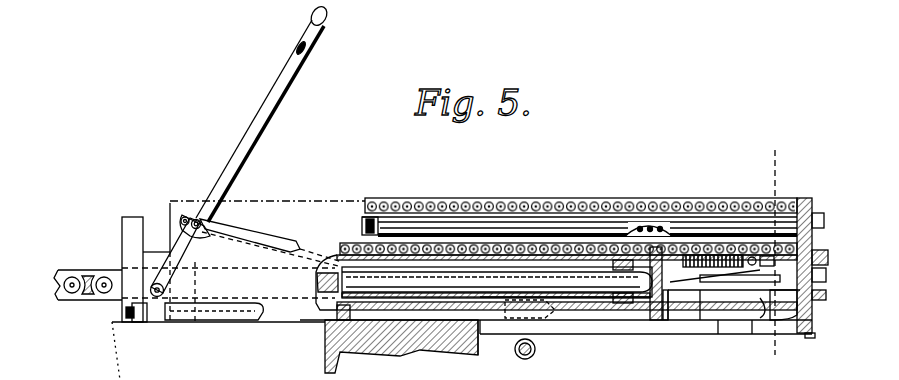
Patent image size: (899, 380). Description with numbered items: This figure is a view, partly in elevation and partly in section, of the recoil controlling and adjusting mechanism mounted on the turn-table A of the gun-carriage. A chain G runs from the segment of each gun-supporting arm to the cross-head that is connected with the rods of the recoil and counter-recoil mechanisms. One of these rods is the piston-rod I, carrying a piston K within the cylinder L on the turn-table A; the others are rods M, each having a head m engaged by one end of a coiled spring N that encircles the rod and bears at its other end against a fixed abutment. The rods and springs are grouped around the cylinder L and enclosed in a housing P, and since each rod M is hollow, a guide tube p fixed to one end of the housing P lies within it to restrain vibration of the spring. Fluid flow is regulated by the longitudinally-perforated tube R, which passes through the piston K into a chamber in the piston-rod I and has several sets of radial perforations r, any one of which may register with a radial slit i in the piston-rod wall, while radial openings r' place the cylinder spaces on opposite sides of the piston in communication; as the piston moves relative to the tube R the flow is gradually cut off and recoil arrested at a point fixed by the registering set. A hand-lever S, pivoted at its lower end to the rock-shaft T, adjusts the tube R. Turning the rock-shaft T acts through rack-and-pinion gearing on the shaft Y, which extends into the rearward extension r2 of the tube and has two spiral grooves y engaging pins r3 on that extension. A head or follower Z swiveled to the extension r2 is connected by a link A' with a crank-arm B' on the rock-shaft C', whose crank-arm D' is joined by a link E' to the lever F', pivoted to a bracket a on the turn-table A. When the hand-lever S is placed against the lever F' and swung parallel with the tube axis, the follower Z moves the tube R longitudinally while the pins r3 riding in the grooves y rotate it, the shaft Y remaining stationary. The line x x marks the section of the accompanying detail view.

The section line x is at (773, 252).
The turn-table A is at (238, 290).
The chain G is at (76, 272).
The bracket a is at (156, 312).
The rock-shaft T is at (233, 312).
The lever F' is at (192, 257).
The pivot o is at (194, 212).
The hand-lever S is at (258, 123).
The link E' is at (271, 235).
The longitudinally-perforated rod or tube R is at (424, 332).
The rod M is at (480, 200).
The radial slit or passage i is at (518, 220).
The tube p is at (560, 227).
The coiled spring N is at (617, 243).
The housing P is at (696, 225).
The link A' is at (728, 215).
The head m is at (800, 200).
The head or follower Z is at (812, 252).
The studs or pins r3 is at (736, 275).
The spiral grooves y is at (718, 290).
The crank-arm D' is at (497, 323).
The rock-shaft C' is at (535, 359).
The crank-arm B' is at (523, 340).
The cylinder L is at (562, 300).
The piston-rod I is at (605, 305).
The piston K is at (652, 320).
The radial passages or perforations r is at (487, 340).
The radial openings r' is at (661, 323).
The rearward extension r2 is at (718, 334).
The shaft Y is at (752, 334).